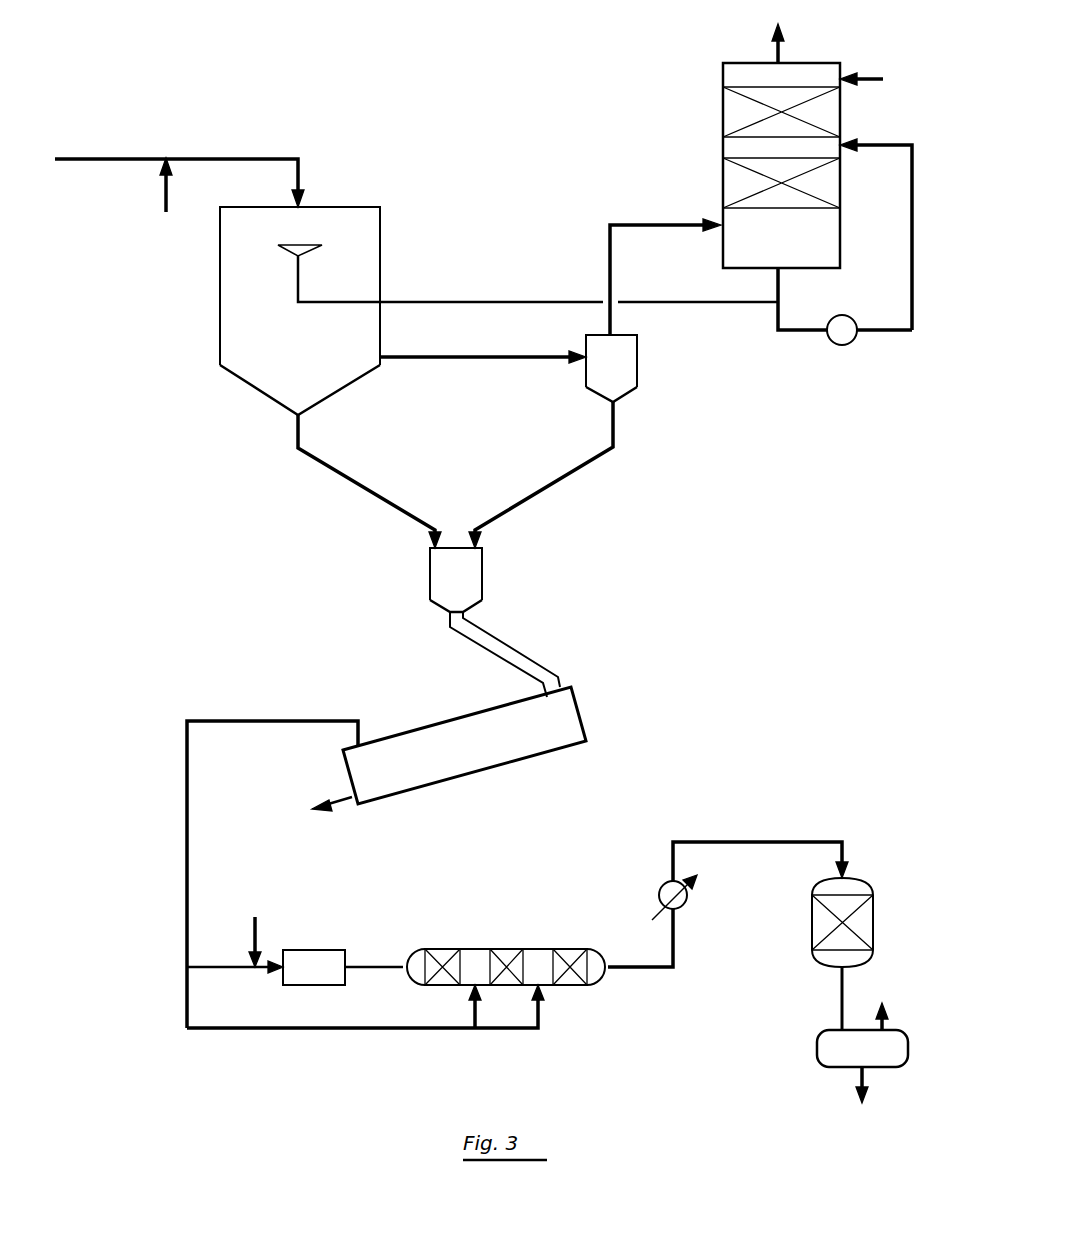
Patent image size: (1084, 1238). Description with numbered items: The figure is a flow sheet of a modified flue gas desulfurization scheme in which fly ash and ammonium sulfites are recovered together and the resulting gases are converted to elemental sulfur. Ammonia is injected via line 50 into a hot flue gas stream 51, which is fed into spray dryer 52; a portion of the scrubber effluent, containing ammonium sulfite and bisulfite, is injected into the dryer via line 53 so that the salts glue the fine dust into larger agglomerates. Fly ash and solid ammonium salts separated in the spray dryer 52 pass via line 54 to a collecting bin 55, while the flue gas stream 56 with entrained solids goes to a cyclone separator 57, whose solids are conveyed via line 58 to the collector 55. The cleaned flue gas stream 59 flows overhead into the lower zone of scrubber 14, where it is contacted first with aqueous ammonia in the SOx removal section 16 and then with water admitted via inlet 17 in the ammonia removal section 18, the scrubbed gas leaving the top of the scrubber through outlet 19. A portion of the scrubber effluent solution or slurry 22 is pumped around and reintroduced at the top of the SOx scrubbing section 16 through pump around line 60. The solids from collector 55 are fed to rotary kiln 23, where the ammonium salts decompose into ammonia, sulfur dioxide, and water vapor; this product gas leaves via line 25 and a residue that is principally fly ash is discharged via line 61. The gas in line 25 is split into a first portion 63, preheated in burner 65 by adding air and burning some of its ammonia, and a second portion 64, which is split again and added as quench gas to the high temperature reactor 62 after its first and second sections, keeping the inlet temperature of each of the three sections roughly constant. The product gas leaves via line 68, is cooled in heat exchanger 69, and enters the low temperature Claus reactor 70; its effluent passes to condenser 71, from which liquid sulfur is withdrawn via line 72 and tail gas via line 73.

The scrubber 14 is at (695, 147).
The SOx removal section 16 is at (832, 185).
The inlet 17 is at (869, 72).
The ammonia removal section 18 is at (832, 113).
The overhead outlet 19 is at (782, 52).
The scrubber effluent solution or slurry 22 is at (774, 288).
The rotary kiln 23 is at (454, 714).
The line 25 is at (300, 714).
The line 50 is at (166, 192).
The flue gas stream 51 is at (109, 156).
The spray dryer 52 is at (220, 298).
The line 53 is at (437, 309).
The line 54 is at (344, 483).
The collecting bin 55 is at (480, 574).
The flue gas stream 56 is at (437, 365).
The cyclone separator 57 is at (636, 361).
The line 58 is at (550, 491).
The flue gas stream 59 is at (662, 222).
The pump around line 60 is at (908, 216).
The line 61 is at (338, 814).
The high temperature reactor 62 is at (482, 940).
The first portion 63 is at (228, 961).
The portion of reaction gas 64 is at (187, 1016).
The burner 65 is at (332, 944).
The line 68 is at (673, 952).
The heat exchanger 69 is at (688, 902).
The low temperature Claus reactor 70 is at (868, 919).
The condenser 71 is at (825, 1028).
The line 72 is at (858, 1090).
The line 73 is at (888, 992).